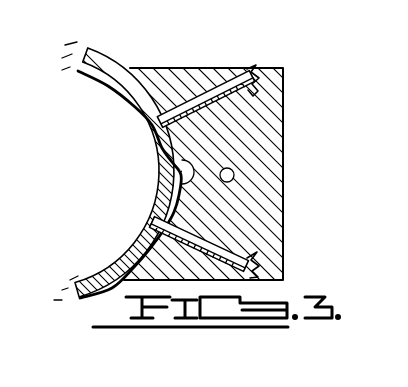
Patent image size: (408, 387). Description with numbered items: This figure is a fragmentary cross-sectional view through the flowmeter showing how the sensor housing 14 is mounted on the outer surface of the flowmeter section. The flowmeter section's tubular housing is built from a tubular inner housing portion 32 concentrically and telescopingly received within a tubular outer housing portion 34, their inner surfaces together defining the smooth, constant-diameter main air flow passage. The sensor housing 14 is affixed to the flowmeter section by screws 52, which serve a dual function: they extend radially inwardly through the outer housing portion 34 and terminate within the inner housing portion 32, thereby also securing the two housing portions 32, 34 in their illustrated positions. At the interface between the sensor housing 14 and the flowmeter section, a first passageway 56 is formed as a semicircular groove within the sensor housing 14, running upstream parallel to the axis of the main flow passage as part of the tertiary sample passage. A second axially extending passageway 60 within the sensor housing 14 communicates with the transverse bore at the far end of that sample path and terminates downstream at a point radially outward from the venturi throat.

The sensor housing 14 is at (288, 116).
The tubular inner housing portion 32 is at (116, 87).
The tubular outer housing portion 34 is at (105, 54).
The screws 52 is at (250, 70).
The first passageway 56 is at (186, 169).
The second axially extending passageway 60 is at (234, 168).